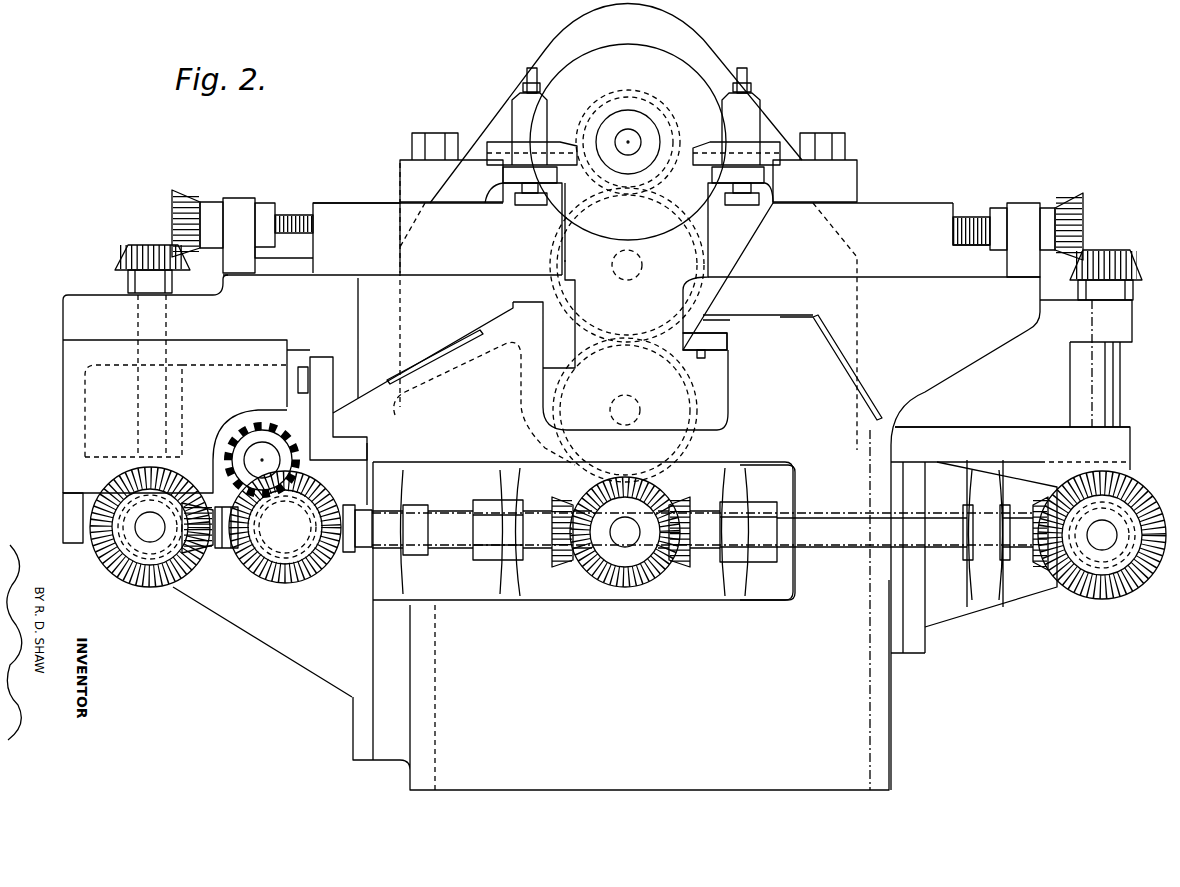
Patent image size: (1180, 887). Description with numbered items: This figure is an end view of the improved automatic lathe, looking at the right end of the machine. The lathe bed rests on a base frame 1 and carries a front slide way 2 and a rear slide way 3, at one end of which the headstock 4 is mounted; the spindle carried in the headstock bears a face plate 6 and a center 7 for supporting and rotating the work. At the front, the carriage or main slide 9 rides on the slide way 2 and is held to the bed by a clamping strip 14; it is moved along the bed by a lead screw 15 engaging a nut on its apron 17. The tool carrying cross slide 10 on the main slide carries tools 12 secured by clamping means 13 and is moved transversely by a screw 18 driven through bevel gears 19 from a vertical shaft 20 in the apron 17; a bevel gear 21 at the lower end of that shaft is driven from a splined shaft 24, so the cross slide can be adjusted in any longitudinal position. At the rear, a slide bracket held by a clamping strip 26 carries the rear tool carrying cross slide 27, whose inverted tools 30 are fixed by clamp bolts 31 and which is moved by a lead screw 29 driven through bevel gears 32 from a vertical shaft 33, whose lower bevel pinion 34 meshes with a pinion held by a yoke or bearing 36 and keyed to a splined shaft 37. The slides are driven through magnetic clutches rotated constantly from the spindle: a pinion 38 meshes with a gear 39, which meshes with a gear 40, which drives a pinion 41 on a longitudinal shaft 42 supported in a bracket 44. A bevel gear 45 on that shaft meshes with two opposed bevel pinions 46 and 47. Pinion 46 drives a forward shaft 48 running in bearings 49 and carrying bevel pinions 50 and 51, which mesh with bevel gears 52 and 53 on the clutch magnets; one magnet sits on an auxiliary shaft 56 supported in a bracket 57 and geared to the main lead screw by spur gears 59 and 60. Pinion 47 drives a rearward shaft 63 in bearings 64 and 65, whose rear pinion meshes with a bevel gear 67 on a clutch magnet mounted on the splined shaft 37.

The base frame 1 is at (887, 702).
The slide way 2 is at (438, 350).
The slide way 3 is at (822, 361).
The headstock 4 is at (720, 52).
The face plate 6 is at (675, 63).
The center 7 is at (628, 128).
The carriage or main slide 9 is at (210, 367).
The tool carrying cross slide 10 is at (367, 212).
The tool 12 is at (559, 138).
The clamping means 13 is at (527, 80).
The clamping strip 14 is at (322, 427).
The lead screw 15 is at (246, 451).
The apron 17 is at (63, 439).
The screw 18 is at (300, 214).
The bevel gears 19 is at (177, 216).
The vertical shaft 20 is at (167, 320).
The bevel gear 21 is at (110, 467).
The splined shaft 24 is at (133, 587).
The clamping strip 26 is at (713, 333).
The rear tool carrying cross slide 27 is at (912, 213).
The lead screw 29 is at (970, 220).
The tool 30 is at (707, 140).
The clamp bolt 31 is at (752, 77).
The bevel gears 32 is at (1082, 215).
The vertical shaft 33 is at (1102, 400).
The bevel pinion 34 is at (1067, 463).
The yoke or bearing 36 is at (1086, 321).
The splined shaft 37 is at (1102, 548).
The pinion 38 is at (567, 200).
The gear 39 is at (703, 250).
The gear 40 is at (688, 378).
The pinion 41 is at (668, 497).
The shaft 42 is at (627, 540).
The bracket 44 is at (778, 470).
The bevel gear 45 is at (618, 555).
The bevel pinion 46 is at (566, 567).
The bevel pinion 47 is at (681, 565).
The shaft 48 is at (455, 520).
The bearings 49 is at (422, 500).
The bevel pinion 50 is at (322, 591).
The bevel pinion 51 is at (212, 557).
The bevel gear 52 is at (250, 585).
The bevel gear 53 is at (150, 560).
The auxiliary shaft 56 is at (305, 590).
The bracket 57 is at (293, 647).
The spur gear 59 is at (320, 485).
The spur gear 60 is at (248, 424).
The shaft 63 is at (852, 520).
The bearing 64 is at (770, 513).
The bearing 65 is at (978, 574).
The bevel gear 67 is at (1077, 590).